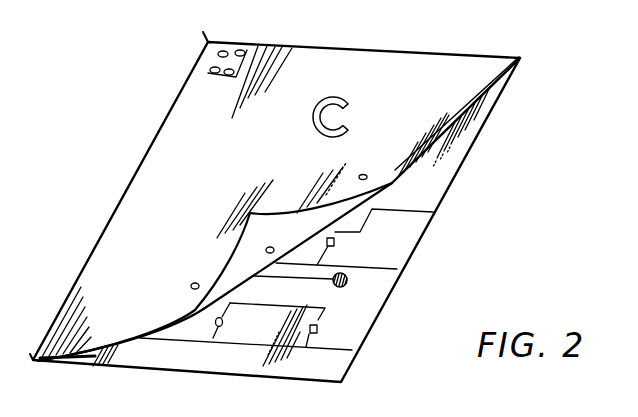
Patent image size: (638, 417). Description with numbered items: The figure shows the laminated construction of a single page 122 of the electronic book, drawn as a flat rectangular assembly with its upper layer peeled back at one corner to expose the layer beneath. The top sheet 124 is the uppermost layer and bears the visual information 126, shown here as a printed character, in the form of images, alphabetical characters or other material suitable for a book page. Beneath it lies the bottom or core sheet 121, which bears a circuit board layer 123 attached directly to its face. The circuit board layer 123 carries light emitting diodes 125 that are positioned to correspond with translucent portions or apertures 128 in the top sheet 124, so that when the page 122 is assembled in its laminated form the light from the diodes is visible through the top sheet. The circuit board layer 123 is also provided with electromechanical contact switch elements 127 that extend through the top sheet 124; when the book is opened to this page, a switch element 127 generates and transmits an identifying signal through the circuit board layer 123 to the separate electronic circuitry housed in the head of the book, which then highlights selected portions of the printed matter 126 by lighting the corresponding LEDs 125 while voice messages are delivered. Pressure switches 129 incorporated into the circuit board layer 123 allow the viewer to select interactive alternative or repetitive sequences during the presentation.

The bottom or core sheet 121 is at (466, 161).
The page 122 is at (163, 205).
The circuit board layer 123 is at (388, 271).
The top sheet 124 is at (230, 243).
The light emitting diodes 125 is at (334, 243).
The visual information 126 is at (352, 101).
The electromechanical contact switch elements 127 is at (218, 73).
The translucent portions or apertures 128 is at (194, 283).
The pressure switches 129 is at (341, 287).